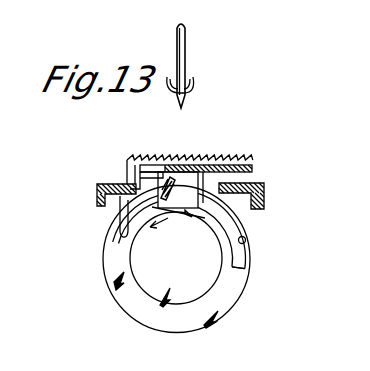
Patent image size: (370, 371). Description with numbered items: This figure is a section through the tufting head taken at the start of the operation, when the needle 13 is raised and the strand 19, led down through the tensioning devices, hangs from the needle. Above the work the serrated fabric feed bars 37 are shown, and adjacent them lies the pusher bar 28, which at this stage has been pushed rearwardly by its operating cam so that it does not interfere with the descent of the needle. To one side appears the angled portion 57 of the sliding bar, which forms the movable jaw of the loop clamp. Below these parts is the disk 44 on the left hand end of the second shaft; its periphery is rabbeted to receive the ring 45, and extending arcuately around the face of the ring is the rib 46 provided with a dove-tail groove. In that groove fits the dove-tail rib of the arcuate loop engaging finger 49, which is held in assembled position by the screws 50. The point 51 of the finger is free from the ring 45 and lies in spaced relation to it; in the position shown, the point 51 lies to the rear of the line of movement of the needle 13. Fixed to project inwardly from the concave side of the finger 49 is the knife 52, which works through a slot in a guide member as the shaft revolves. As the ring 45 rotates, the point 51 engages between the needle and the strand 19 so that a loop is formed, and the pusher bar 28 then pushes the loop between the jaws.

The needle 13 is at (184, 47).
The strand 19 is at (188, 80).
The fabric feed bars 37 is at (200, 158).
The pusher bar 28 is at (250, 167).
The angled portion 57 is at (97, 198).
The point of finger 51 is at (120, 225).
The ring 45 is at (138, 320).
The disk 44 is at (140, 263).
The loop engaging finger 49 is at (228, 216).
The screws 50 is at (246, 240).
The rib 46 is at (233, 262).
The knife 52 is at (164, 215).